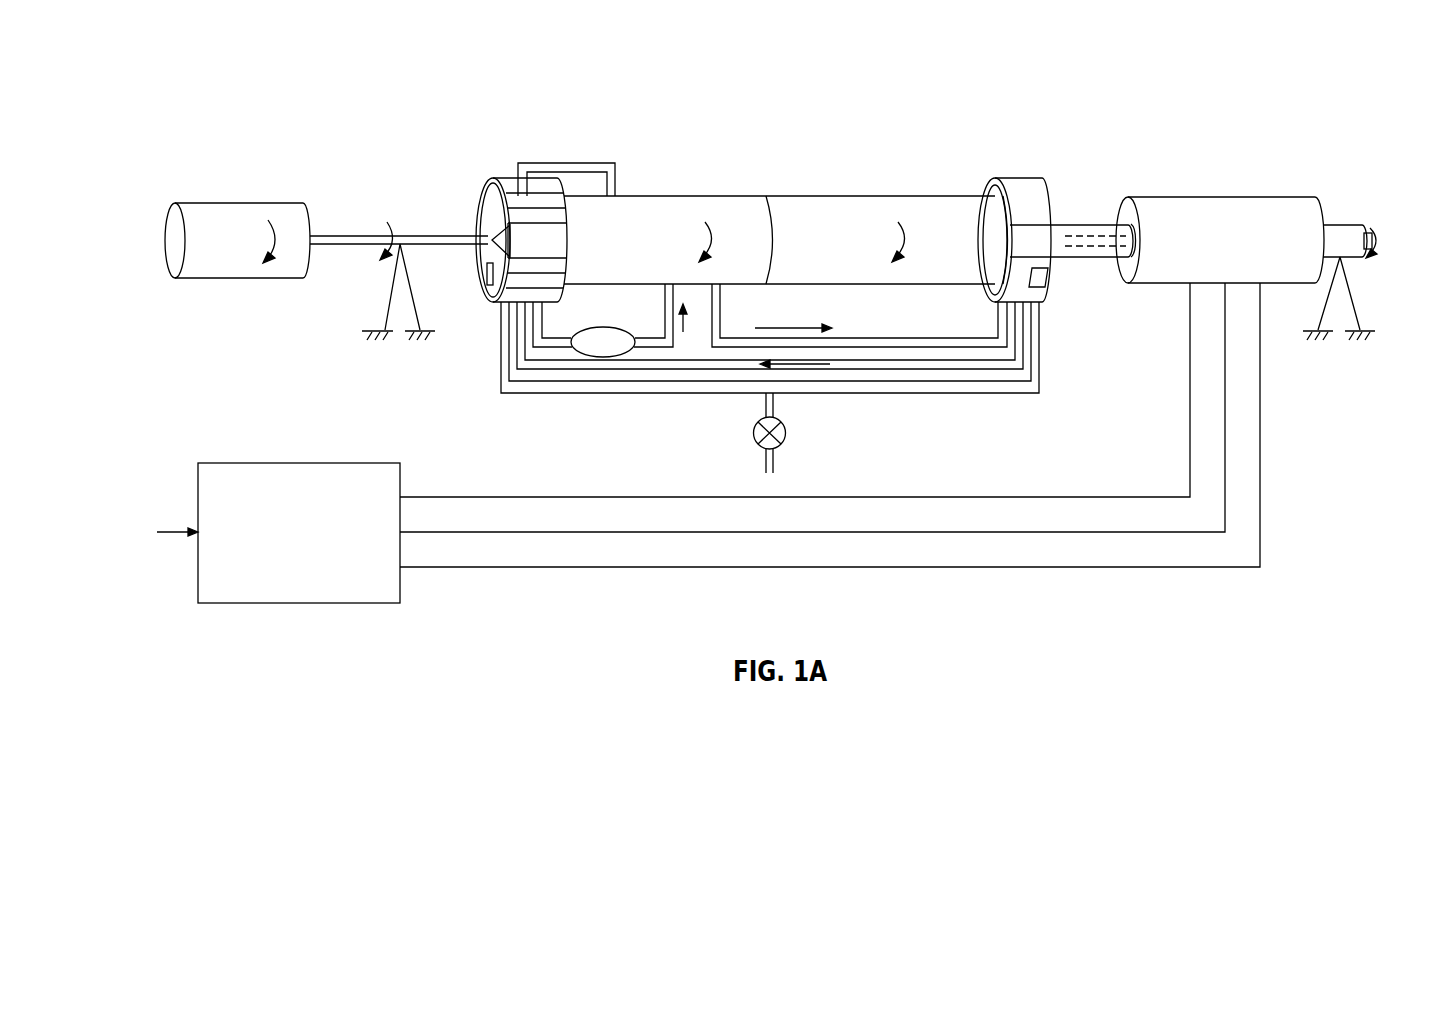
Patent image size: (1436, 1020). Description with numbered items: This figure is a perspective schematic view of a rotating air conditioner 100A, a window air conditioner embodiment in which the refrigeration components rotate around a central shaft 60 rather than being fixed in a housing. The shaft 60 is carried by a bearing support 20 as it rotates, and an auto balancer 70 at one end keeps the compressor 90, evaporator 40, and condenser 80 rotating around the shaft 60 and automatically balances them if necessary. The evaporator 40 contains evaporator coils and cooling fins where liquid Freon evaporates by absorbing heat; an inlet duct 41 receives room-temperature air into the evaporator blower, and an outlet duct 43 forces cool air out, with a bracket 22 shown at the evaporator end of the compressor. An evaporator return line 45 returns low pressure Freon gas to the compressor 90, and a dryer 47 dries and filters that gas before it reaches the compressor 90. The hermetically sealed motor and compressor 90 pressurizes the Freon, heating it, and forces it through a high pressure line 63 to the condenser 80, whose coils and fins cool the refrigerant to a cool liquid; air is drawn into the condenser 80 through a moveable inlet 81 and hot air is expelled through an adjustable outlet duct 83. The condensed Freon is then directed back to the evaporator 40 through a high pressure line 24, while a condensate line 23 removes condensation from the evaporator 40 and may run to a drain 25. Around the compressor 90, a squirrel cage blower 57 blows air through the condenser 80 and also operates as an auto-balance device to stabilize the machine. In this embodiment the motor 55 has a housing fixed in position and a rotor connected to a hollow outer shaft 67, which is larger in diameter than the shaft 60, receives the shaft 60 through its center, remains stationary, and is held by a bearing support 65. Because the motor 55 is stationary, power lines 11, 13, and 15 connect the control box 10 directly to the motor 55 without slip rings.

The rotating air conditioner 100A is at (406, 92).
The control box 10 is at (232, 604).
The power line 11 is at (640, 496).
The power line 13 is at (702, 531).
The power line 15 is at (763, 565).
The bearing support 20 is at (387, 298).
The bracket 22 is at (588, 163).
The condensate line 23 is at (620, 393).
The high pressure line 24 is at (933, 369).
The drain 25 is at (786, 430).
The evaporator 40 is at (525, 222).
The inlet duct 41 is at (482, 278).
The outlet duct 43 is at (557, 238).
The evaporator return line 45 is at (545, 335).
The dryer 47 is at (613, 328).
The motor 55 is at (1303, 197).
The blower 57 is at (880, 196).
The shaft 60 is at (427, 233).
The high pressure line 63 is at (860, 338).
The bearing support 65 is at (1352, 288).
The outer shaft 67 is at (1357, 232).
The auto balancer 70 is at (197, 203).
The condenser 80 is at (1055, 220).
The moveable inlet 81 is at (1045, 283).
The adjustable outlet duct 83 is at (1040, 235).
The compressor 90 is at (779, 209).